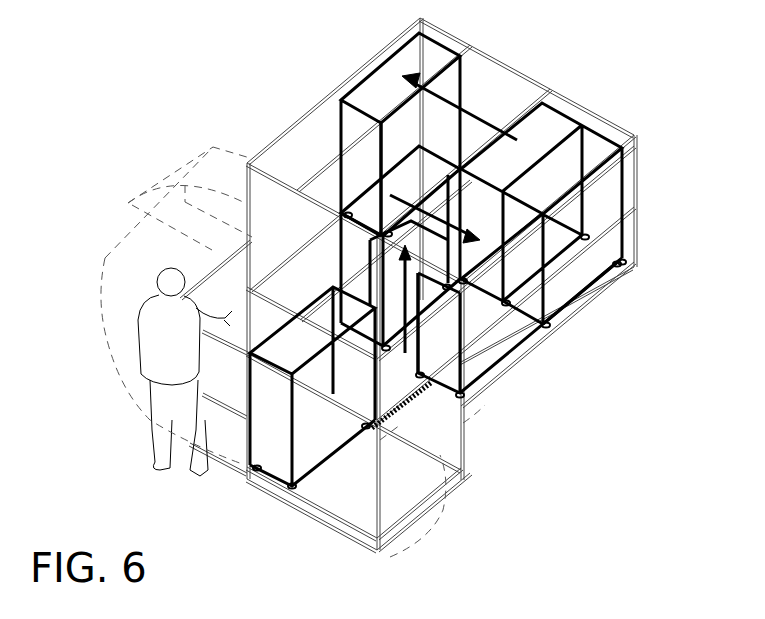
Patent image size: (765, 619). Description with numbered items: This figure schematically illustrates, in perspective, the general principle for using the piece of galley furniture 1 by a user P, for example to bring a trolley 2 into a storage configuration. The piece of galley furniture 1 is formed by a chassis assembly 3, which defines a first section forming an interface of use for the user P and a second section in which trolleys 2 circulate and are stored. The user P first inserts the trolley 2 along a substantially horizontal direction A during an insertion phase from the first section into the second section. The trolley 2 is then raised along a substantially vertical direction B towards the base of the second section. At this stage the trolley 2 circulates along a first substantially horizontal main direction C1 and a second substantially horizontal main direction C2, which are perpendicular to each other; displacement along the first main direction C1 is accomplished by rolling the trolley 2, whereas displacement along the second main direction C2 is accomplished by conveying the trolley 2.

The piece of galley furniture 1 is at (237, 128).
The trolley 2 is at (547, 115).
The chassis assembly 3 is at (634, 186).
The first main direction C1 is at (478, 110).
The second main direction C2 is at (555, 255).
The substantially horizontal direction A is at (348, 375).
The substantially vertical direction B is at (425, 298).
The user P is at (158, 344).